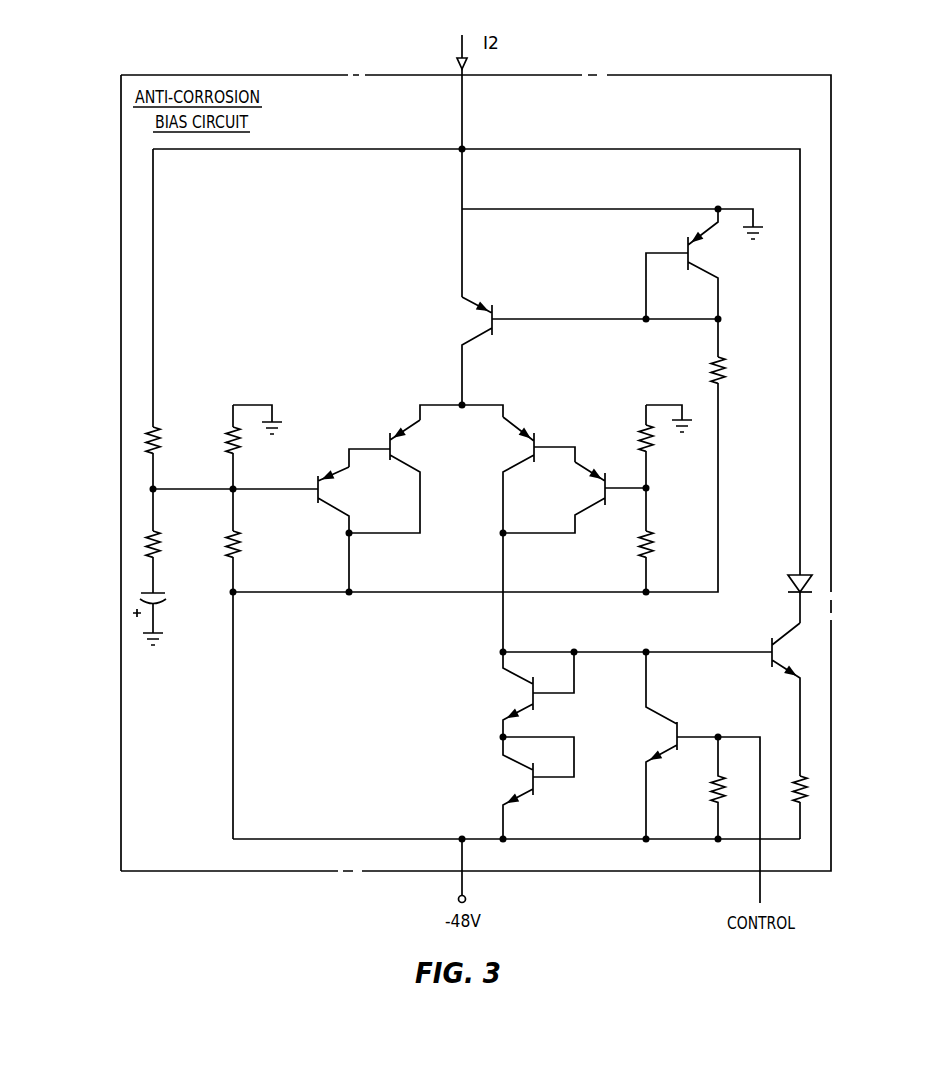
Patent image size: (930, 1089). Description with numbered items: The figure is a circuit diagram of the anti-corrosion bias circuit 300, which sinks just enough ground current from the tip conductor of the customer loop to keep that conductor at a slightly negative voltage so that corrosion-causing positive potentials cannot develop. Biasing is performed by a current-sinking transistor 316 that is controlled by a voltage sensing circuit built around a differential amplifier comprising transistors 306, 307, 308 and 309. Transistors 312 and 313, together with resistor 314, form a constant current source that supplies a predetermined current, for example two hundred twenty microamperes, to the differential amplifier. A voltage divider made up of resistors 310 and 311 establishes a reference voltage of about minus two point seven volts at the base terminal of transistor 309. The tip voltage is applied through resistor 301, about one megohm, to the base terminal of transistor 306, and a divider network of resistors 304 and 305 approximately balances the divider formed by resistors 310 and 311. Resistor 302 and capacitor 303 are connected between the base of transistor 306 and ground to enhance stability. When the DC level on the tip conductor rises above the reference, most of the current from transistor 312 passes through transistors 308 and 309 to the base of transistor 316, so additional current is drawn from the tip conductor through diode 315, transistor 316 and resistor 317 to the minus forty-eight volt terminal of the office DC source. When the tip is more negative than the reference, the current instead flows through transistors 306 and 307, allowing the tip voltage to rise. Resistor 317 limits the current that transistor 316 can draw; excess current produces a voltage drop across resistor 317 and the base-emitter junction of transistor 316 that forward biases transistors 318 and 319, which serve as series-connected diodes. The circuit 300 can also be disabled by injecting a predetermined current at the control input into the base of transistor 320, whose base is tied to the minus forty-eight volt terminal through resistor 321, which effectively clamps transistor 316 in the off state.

The anti-corrosion bias circuit 300 is at (240, 75).
The resistor 301 is at (163, 446).
The resistor 302 is at (164, 545).
The capacitor 303 is at (168, 601).
The resistor 304 is at (243, 442).
The resistor 305 is at (247, 545).
The transistor 306 is at (334, 461).
The transistor 307 is at (398, 422).
The transistor 308 is at (521, 423).
The transistor 309 is at (587, 462).
The resistor 310 is at (656, 442).
The resistor 311 is at (660, 540).
The transistor 312 is at (482, 295).
The transistor 313 is at (688, 233).
The resistor 314 is at (728, 375).
The diode 315 is at (785, 584).
The current-sinking transistor 316 is at (778, 679).
The resistor 317 is at (786, 783).
The transistor 318 is at (507, 711).
The transistor 319 is at (507, 801).
The transistor 320 is at (668, 756).
The resistor 321 is at (705, 791).